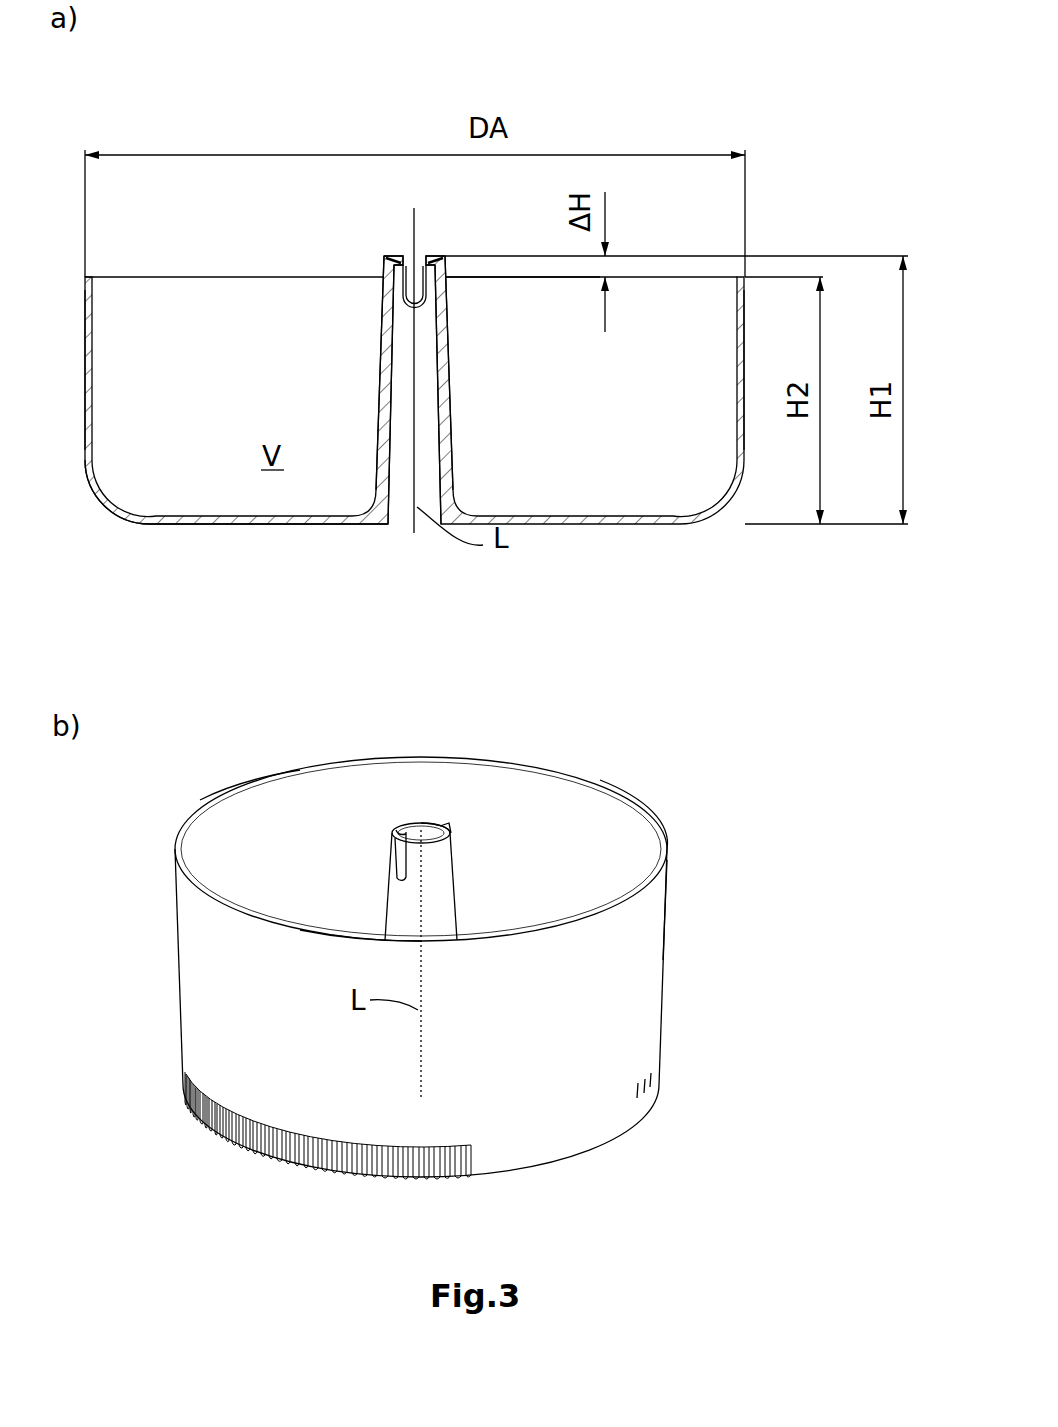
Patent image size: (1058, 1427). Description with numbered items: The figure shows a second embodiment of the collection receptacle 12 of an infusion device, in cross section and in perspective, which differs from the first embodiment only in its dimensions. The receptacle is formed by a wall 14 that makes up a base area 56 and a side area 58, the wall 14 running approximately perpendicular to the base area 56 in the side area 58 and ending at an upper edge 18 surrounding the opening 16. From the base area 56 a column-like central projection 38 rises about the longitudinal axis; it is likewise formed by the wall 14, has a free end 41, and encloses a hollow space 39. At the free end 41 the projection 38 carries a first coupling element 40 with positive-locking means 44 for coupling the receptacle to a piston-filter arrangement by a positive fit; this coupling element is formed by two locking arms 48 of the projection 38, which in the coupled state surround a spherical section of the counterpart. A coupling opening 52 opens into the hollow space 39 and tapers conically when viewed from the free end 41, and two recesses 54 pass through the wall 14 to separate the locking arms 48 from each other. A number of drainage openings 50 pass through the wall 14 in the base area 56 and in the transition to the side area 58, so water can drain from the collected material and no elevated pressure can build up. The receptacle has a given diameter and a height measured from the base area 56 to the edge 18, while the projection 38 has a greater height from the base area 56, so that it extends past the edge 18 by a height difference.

In FIG. 3a, the collection receptacle 12 is at (218, 108).
In FIG. 3b, the collection receptacle 12 is at (273, 742).
In FIG. 3a, the wall 14 is at (92, 336).
In FIG. 3b, the wall 14 is at (662, 947).
In FIG. 3a, the opening 16 is at (165, 272).
In FIG. 3b, the opening 16 is at (287, 800).
In FIG. 3a, the edge 18 is at (80, 272).
In FIG. 3b, the edge 18 is at (658, 848).
In FIG. 3a, the projection 38 is at (450, 386).
In FIG. 3b, the projection 38 is at (448, 890).
In FIG. 3a, the hollow space 39 is at (397, 505).
In FIG. 3a, the first coupling element 40 is at (578, 183).
In FIG. 3b, the first coupling element 40 is at (580, 781).
In FIG. 3a, the free end 41 is at (452, 277).
In FIG. 3b, the free end 41 is at (378, 827).
In FIG. 3a, the positive-locking means 44 is at (437, 258).
In FIG. 3b, the positive-locking means 44 is at (452, 830).
In FIG. 3a, the locking arm 48 is at (385, 261).
In FIG. 3b, the locking arm 48 is at (397, 826).
In FIG. 3b, the drainage opening 50 is at (373, 1177).
In FIG. 3a, the coupling opening 52 is at (401, 254).
In FIG. 3b, the coupling opening 52 is at (430, 832).
In FIG. 3a, the recess 54 is at (406, 292).
In FIG. 3b, the recess 54 is at (398, 868).
In FIG. 3a, the base area 56 is at (272, 518).
In FIG. 3a, the side area 58 is at (92, 425).